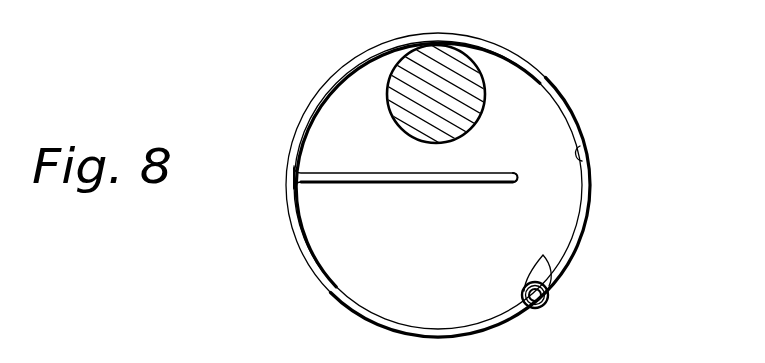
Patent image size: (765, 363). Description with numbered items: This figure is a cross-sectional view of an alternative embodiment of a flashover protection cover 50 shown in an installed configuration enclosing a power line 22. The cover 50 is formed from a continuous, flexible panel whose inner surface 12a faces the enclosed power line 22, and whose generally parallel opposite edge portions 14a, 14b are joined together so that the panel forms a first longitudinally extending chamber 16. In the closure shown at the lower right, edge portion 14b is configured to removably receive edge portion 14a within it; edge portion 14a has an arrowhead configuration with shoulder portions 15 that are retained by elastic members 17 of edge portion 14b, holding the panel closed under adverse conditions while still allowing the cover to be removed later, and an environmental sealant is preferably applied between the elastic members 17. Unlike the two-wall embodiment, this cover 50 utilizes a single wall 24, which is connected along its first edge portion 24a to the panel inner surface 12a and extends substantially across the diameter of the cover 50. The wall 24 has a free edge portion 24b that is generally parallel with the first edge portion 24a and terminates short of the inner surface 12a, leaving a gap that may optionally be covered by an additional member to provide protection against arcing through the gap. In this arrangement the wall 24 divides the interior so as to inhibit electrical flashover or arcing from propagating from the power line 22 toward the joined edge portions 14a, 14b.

The flashover protection cover 50 is at (557, 68).
The power line 22 is at (396, 67).
The wall 24 is at (345, 172).
The first edge portion 24a is at (294, 178).
The free edge portion 24b is at (516, 186).
The inner surface 12a is at (580, 162).
The first longitudinally extending chamber 16 is at (352, 257).
The edge portion 14b is at (542, 257).
The edge portion 14a is at (549, 293).
The shoulder portions 15 is at (524, 289).
The elastic members 17 is at (522, 294).